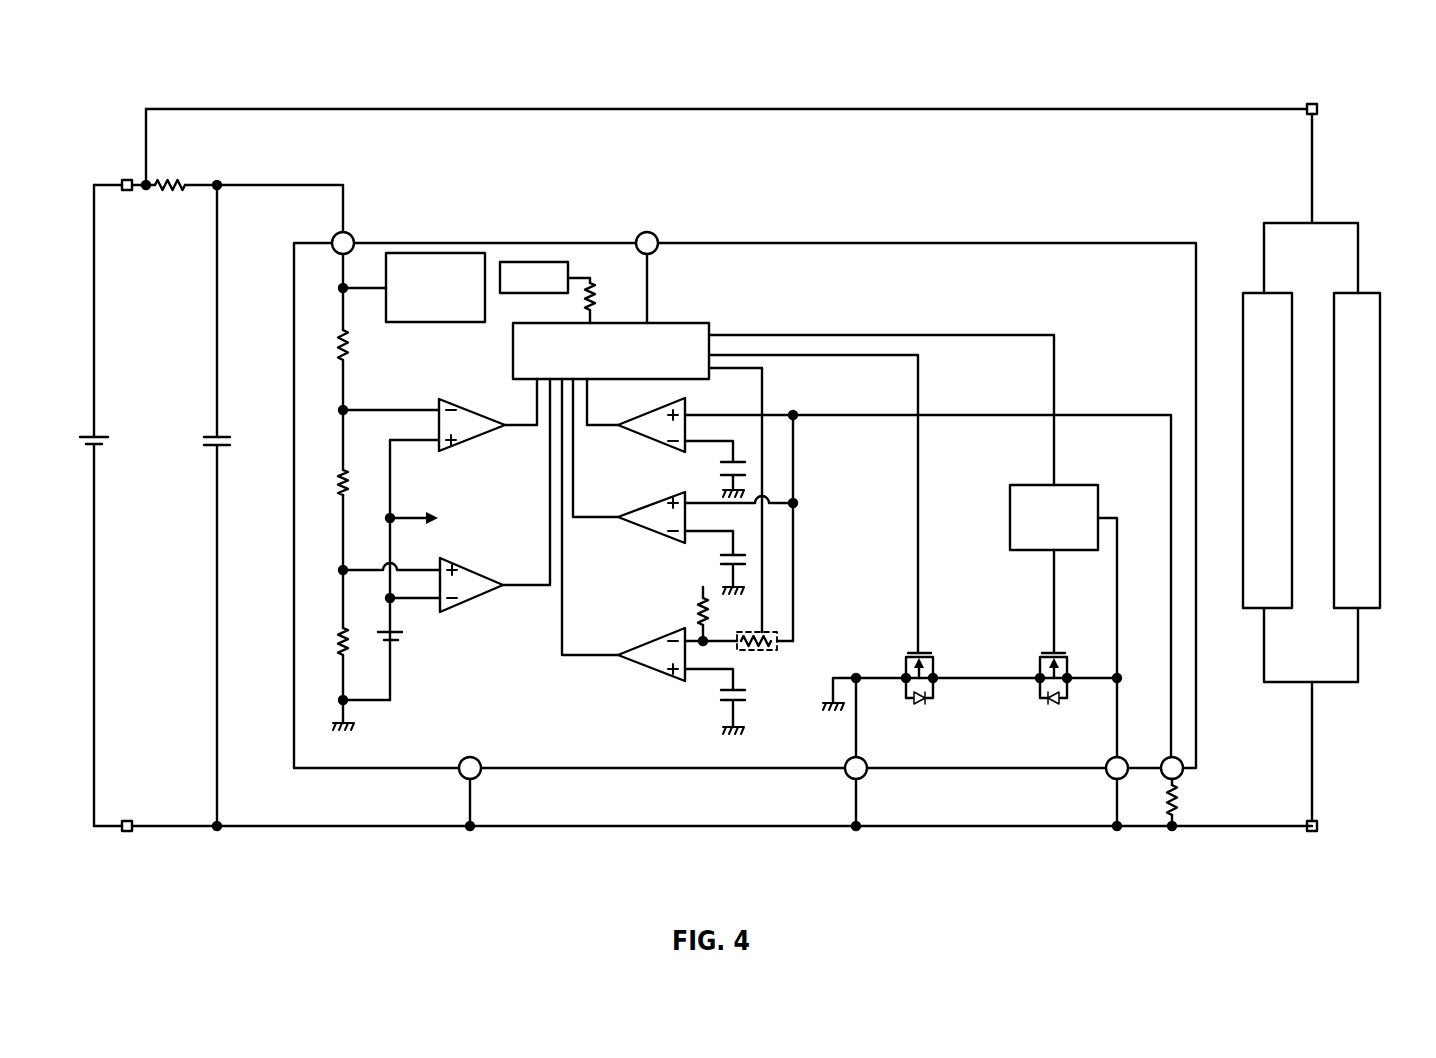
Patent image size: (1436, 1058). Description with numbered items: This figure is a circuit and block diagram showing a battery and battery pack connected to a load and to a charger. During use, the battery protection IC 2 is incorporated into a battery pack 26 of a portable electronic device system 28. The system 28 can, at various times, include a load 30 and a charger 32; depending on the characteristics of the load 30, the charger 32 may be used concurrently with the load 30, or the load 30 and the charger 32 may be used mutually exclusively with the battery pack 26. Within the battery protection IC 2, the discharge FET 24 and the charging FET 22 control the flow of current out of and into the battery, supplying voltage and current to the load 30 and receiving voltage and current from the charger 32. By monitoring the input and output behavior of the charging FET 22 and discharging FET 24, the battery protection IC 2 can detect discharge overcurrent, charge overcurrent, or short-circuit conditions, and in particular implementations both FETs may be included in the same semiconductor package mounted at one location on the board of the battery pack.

The portable electronic device system 28 is at (127, 86).
The battery pack 26 is at (527, 108).
The battery protection integrated circuit 2 is at (733, 243).
The discharging FET 24 is at (905, 672).
The charging FET 22 is at (1067, 668).
The load 30 is at (1293, 298).
The charger 32 is at (1382, 452).